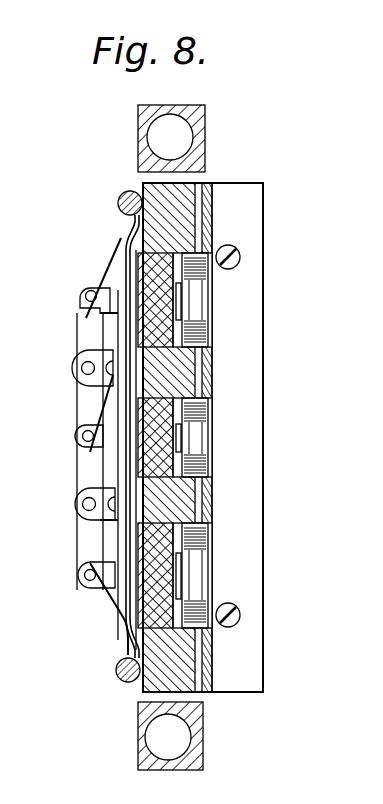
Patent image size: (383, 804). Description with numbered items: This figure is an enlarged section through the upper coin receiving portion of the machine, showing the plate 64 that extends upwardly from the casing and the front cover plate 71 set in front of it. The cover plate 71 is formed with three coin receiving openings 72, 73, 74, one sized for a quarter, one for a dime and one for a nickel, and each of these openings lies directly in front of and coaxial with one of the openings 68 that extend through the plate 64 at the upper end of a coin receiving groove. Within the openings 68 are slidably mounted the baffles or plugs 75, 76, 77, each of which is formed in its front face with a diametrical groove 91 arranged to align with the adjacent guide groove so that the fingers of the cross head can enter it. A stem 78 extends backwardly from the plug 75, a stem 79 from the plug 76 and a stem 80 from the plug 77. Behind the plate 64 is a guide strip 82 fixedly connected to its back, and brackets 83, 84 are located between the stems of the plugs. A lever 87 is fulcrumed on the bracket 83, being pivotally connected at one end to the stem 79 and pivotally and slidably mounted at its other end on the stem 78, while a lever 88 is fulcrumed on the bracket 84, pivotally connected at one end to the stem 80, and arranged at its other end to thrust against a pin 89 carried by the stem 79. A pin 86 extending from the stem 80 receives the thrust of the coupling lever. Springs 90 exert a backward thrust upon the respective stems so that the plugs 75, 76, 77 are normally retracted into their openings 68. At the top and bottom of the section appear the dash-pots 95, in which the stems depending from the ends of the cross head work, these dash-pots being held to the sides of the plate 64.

The plate 64 is at (185, 192).
The opening 68 is at (185, 254).
The front cover plate 71 is at (214, 493).
The coin receiving opening 72 is at (205, 568).
The coin receiving opening 73 is at (207, 428).
The coin receiving opening 74 is at (205, 309).
The plug 75 is at (126, 251).
The plug 76 is at (142, 461).
The plug 77 is at (142, 541).
The stem 78 is at (83, 297).
The stem 79 is at (113, 448).
The stem 80 is at (110, 613).
The guide strip 82 is at (122, 276).
The bracket 83 is at (96, 359).
The bracket 84 is at (92, 522).
The pin 86 is at (77, 574).
The lever 87 is at (80, 323).
The lever 88 is at (88, 491).
The pin 89 is at (82, 434).
The spring 90 is at (110, 259).
The diametrical groove 91 is at (182, 301).
The dash-pot 95 is at (198, 116).